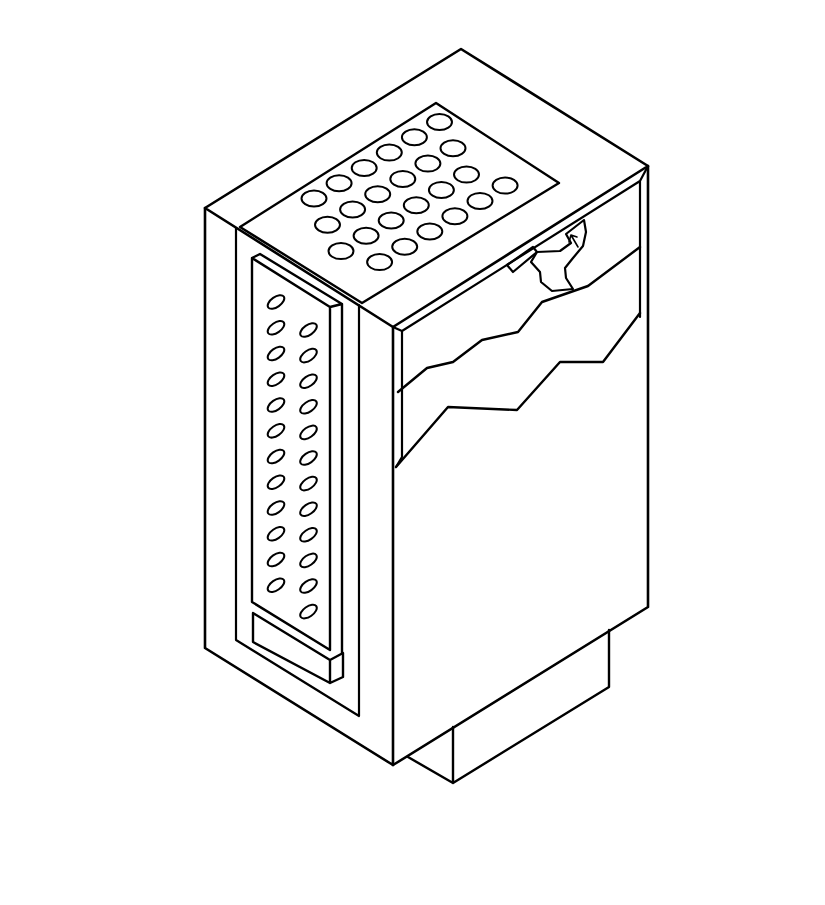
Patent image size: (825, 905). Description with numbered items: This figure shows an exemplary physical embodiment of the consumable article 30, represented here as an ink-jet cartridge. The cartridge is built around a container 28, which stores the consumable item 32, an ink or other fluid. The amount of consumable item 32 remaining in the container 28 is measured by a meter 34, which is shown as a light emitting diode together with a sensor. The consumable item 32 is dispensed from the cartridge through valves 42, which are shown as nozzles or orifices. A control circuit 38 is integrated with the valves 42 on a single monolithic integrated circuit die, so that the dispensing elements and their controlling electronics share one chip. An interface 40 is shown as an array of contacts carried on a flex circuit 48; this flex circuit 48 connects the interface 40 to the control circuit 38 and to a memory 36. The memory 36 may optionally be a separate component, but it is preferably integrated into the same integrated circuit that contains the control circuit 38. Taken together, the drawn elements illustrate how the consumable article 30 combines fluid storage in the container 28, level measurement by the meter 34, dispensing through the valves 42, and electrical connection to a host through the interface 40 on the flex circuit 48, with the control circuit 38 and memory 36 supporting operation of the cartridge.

The container 28 is at (563, 532).
The consumable article 30 is at (666, 376).
The consumable item 32 is at (612, 313).
The meter 34 is at (562, 252).
The memory 36 is at (263, 633).
The control circuit 38 is at (265, 284).
The interface 40 is at (357, 168).
The valves 42 is at (262, 352).
The flex circuit 48 is at (285, 218).